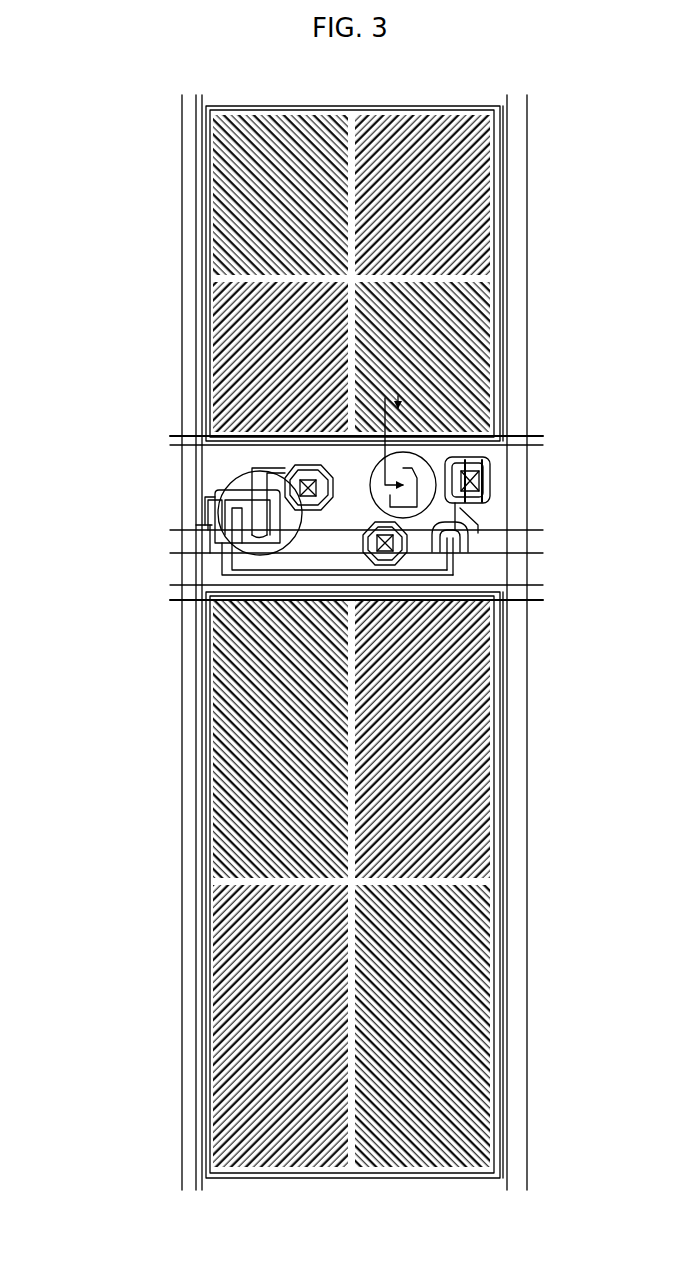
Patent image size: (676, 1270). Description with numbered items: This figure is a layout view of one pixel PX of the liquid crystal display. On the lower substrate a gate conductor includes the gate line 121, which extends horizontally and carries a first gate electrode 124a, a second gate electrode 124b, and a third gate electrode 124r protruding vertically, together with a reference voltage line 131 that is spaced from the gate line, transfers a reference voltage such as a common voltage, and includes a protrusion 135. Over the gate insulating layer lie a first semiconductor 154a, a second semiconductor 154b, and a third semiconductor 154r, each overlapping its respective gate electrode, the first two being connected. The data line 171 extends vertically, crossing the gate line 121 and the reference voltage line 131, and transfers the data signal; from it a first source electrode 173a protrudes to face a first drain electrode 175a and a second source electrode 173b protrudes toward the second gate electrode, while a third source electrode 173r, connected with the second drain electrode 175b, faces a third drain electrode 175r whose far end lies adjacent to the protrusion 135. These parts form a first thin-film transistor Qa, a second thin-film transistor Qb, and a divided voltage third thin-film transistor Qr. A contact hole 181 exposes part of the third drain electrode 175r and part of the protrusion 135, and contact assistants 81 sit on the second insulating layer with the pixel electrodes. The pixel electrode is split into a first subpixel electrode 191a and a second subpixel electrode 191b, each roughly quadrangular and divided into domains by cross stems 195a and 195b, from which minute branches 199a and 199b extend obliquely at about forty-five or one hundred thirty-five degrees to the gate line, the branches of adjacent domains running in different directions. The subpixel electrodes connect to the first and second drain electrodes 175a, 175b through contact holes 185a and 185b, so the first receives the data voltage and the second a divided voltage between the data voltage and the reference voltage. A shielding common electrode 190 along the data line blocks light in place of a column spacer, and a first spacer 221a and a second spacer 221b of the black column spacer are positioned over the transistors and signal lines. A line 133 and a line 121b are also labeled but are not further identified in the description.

The pixel PX is at (473, 87).
The data line 171 is at (190, 178).
The shielding common electrode 190 is at (518, 175).
The storage electrode line 133 is at (200, 230).
The first subpixel electrode 191a is at (212, 283).
The second subpixel electrode 191b is at (212, 820).
The minute branches 199a is at (455, 218).
The minute branches 199b is at (450, 946).
The cross stem 195a is at (440, 257).
The cross stem 195b is at (450, 898).
The reference voltage line 131 is at (172, 436).
The contact assistant 81 is at (492, 436).
The gate line 121 is at (173, 530).
The second gate line 121b is at (173, 585).
The first spacer 221a is at (290, 556).
The second spacer 221b is at (410, 448).
The first thin-film transistor Qa is at (284, 533).
The second thin-film transistor Qb is at (228, 482).
The third thin-film transistor Qr is at (450, 565).
The first source electrode 173a is at (250, 560).
The first drain electrode 175a is at (260, 472).
The first semiconductor 154a is at (245, 492).
The first gate electrode 124a is at (290, 478).
The second source electrode 173b is at (220, 500).
The second drain electrode 175b is at (232, 555).
The second semiconductor 154b is at (235, 540).
The second gate electrode 124b is at (215, 490).
The third source electrode 173r is at (455, 565).
The third drain electrode 175r is at (470, 533).
The third semiconductor 154r is at (462, 555).
The third gate electrode 124r is at (480, 515).
The contact hole 185a is at (300, 480).
The contact hole 185b is at (392, 552).
The protrusion 135 is at (485, 470).
The contact hole 181 is at (480, 482).